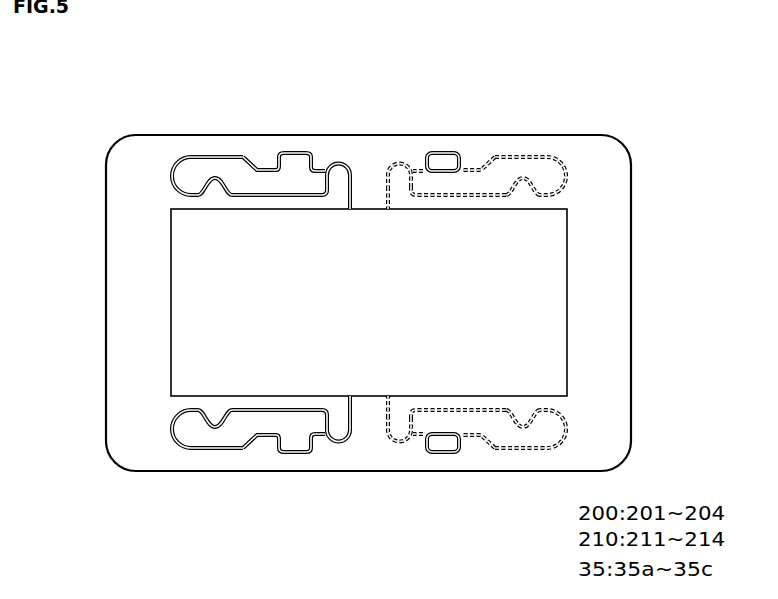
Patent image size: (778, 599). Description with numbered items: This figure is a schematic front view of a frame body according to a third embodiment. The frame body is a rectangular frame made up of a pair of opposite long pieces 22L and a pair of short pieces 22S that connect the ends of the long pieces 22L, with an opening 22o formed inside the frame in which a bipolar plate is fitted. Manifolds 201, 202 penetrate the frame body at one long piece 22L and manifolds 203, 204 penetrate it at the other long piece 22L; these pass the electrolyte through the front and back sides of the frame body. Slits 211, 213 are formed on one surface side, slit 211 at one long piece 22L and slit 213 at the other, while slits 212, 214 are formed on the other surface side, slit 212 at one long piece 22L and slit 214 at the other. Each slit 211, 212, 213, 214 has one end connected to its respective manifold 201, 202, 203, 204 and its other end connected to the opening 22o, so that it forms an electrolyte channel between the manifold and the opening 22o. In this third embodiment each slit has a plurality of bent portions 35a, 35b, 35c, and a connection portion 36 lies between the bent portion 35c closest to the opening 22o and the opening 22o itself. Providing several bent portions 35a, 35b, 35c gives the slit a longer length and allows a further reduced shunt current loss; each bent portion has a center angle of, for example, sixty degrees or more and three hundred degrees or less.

The short piece 22S is at (122, 328).
The long piece 22L is at (360, 143).
The opening 22o is at (565, 303).
The bent portion 35a is at (163, 168).
The bent portion 35b is at (218, 182).
The bent portion 35c is at (335, 165).
The connection portion 36 is at (350, 194).
The manifold 201 is at (290, 453).
The manifold 202 is at (450, 453).
The manifold 203 is at (290, 152).
The manifold 204 is at (450, 152).
The slit 211 is at (224, 453).
The slit 212 is at (514, 453).
The slit 213 is at (224, 152).
The slit 214 is at (514, 152).